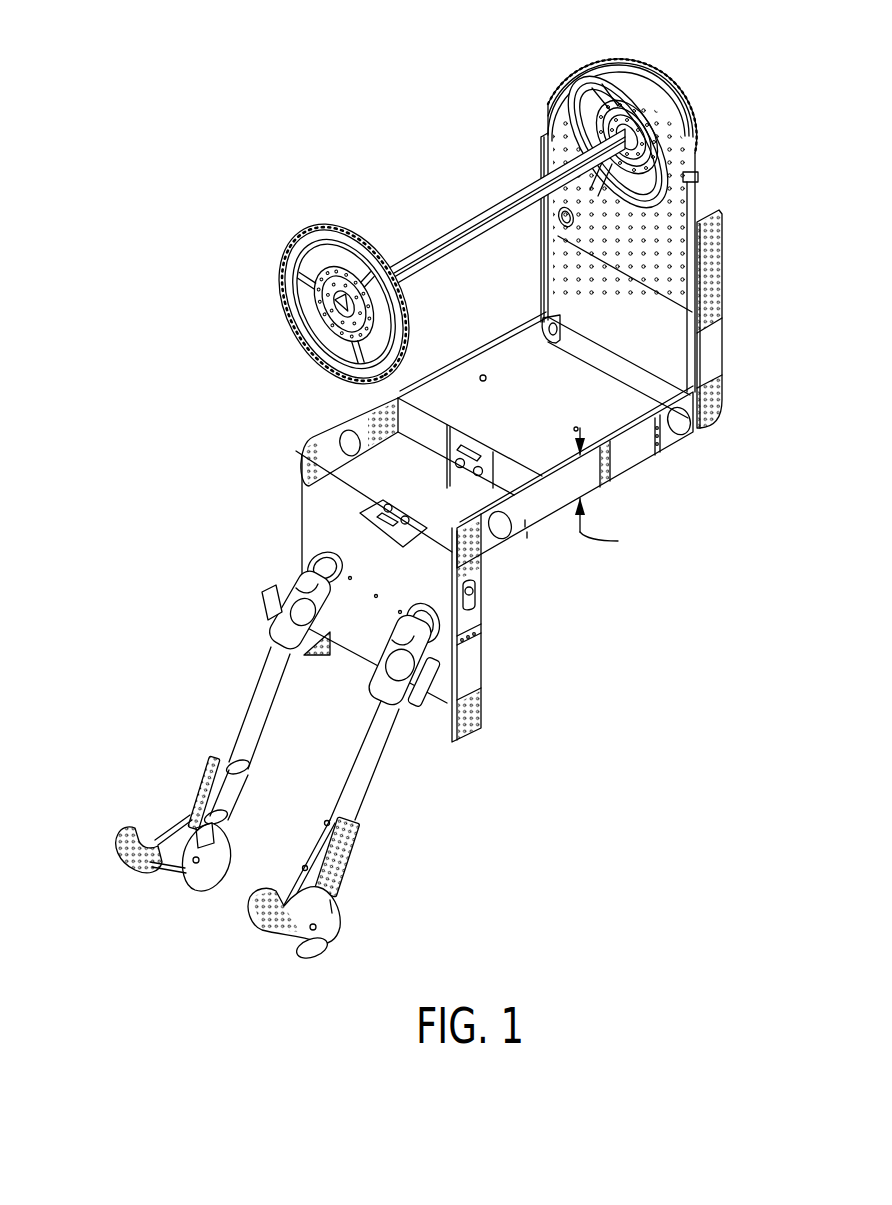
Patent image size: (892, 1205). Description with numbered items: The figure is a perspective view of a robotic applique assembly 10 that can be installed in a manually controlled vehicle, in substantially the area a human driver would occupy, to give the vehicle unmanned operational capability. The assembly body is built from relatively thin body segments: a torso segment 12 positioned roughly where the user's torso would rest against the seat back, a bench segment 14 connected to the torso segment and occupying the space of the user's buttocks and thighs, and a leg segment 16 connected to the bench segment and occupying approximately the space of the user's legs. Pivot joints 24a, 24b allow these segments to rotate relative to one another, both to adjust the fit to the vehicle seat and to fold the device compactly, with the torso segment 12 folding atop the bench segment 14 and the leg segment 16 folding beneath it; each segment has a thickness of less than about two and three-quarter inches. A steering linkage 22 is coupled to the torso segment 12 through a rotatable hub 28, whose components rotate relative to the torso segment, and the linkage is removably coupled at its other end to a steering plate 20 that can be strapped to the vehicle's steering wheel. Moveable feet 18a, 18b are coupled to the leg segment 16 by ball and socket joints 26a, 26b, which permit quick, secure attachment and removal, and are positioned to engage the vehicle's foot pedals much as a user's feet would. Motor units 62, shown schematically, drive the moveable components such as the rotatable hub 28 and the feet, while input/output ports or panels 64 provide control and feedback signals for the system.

The robotic applique assembly 10 is at (146, 549).
The torso segment 12 is at (722, 276).
The bench segment 14 is at (620, 503).
The leg segment 16 is at (505, 628).
The moveable foot 18a is at (266, 672).
The moveable foot 18b is at (372, 762).
The steering plate 20 is at (282, 275).
The steering linkage 22 is at (473, 222).
The pivot joint 24a is at (526, 544).
The pivot joint 24b is at (700, 429).
The ball and socket joint 26a is at (256, 585).
The ball and socket joint 26b is at (430, 729).
The rotatable hub 28 is at (583, 109).
The motor units 62 is at (486, 675).
The input/output ports or panels 64 is at (332, 476).